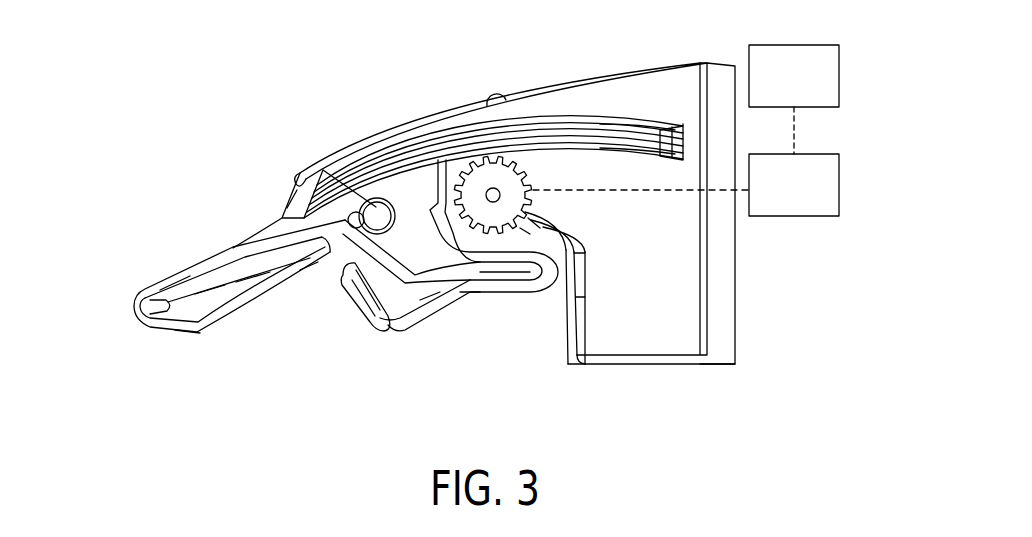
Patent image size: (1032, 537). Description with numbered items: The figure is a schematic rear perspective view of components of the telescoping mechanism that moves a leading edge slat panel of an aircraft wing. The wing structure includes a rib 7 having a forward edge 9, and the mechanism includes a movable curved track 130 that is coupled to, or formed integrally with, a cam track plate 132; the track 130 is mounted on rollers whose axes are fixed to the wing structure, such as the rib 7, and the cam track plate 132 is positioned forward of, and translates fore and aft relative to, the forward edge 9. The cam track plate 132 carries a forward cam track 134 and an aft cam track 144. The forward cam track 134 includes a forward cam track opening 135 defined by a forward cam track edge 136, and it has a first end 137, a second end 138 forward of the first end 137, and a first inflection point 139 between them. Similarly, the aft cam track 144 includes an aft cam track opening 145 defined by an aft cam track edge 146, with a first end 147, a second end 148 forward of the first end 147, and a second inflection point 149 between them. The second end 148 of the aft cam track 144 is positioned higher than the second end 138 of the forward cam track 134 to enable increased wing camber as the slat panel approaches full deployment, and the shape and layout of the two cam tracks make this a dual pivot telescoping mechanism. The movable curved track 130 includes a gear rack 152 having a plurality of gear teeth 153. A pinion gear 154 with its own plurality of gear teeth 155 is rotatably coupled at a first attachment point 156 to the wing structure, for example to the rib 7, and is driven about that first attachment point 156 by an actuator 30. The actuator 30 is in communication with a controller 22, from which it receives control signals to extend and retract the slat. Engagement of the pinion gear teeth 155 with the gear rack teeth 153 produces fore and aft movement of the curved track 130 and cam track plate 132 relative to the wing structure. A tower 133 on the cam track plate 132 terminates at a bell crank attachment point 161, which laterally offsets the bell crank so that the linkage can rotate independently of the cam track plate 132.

The rib 7 is at (692, 262).
The forward edge 9 is at (578, 298).
The controller 22 is at (839, 76).
The actuator 30 is at (839, 183).
The movable curved track 130 is at (455, 142).
The cam track plate 132 is at (272, 228).
The tower 133 is at (355, 212).
The forward cam track 134 is at (173, 298).
The forward cam track opening 135 is at (235, 270).
The forward cam track edge 136 is at (196, 284).
The first end 137 is at (310, 275).
The second end 138 is at (100, 275).
The first inflection point 139 is at (186, 347).
The aft cam track 144 is at (505, 290).
The aft cam track opening 145 is at (440, 308).
The aft cam track edge 146 is at (468, 308).
The first end 147 is at (600, 364).
The second end 148 is at (343, 297).
The second inflection point 149 is at (383, 335).
The gear rack 152 is at (600, 147).
The gear teeth 153 is at (660, 130).
The pinion gear 154 is at (520, 228).
The gear teeth 155 is at (528, 218).
The first attachment point 156 is at (500, 197).
The bell crank attachment point 161 is at (300, 172).